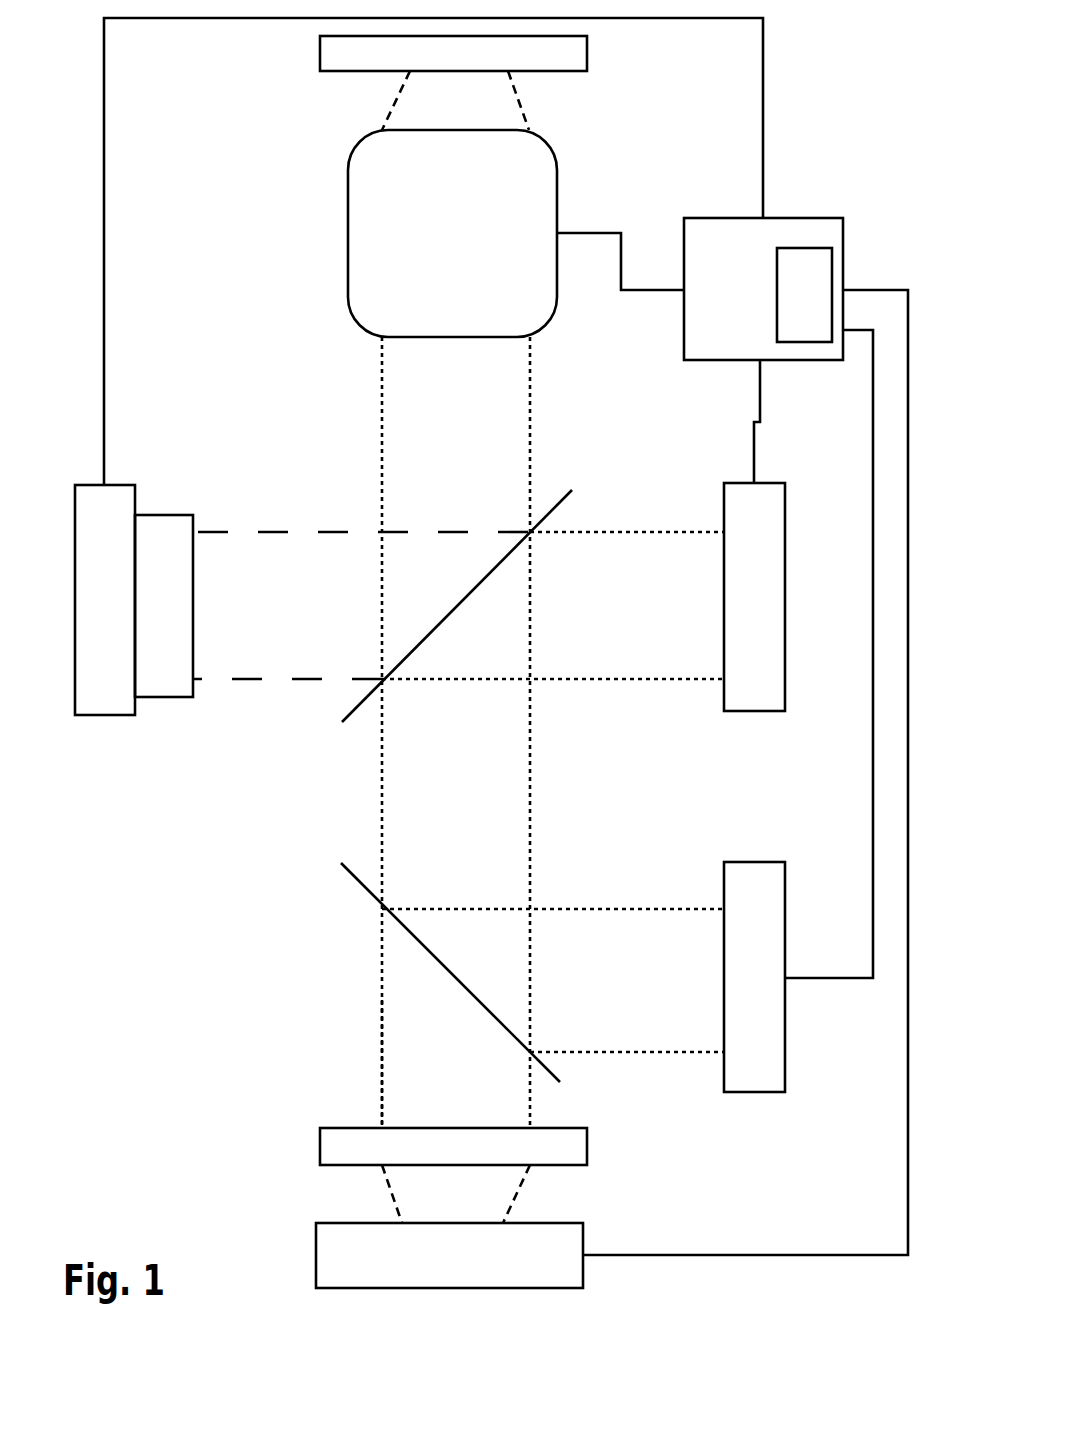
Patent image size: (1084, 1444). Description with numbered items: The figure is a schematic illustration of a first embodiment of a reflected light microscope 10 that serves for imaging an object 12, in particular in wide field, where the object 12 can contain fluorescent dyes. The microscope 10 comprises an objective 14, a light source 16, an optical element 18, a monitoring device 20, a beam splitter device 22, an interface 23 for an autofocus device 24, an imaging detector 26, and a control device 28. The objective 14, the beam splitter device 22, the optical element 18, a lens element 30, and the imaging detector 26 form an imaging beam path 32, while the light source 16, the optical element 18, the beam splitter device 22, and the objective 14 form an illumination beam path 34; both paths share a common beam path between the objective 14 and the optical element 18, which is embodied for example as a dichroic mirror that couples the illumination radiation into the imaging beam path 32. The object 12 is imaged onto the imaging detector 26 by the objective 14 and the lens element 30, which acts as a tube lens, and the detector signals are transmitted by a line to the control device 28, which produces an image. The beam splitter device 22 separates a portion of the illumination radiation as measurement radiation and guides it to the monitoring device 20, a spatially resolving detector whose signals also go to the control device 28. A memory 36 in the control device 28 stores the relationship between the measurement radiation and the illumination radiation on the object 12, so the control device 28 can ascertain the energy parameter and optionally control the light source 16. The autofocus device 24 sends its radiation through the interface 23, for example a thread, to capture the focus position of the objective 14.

The reflected light microscope 10 is at (335, 818).
The object 12 is at (320, 54).
The objective 14 is at (348, 232).
The light source 16 is at (754, 1092).
The optical element 18 is at (370, 893).
The monitoring device 20 is at (754, 711).
The beam splitter device 22 is at (362, 700).
The interface 23 is at (163, 697).
The autofocus device 24 is at (103, 715).
The imaging detector 26 is at (316, 1256).
The control device 28 is at (772, 218).
The lens element 30 is at (320, 1147).
The imaging beam path 32 is at (370, 1082).
The illumination beam path 34 is at (578, 895).
The memory 36 is at (805, 248).